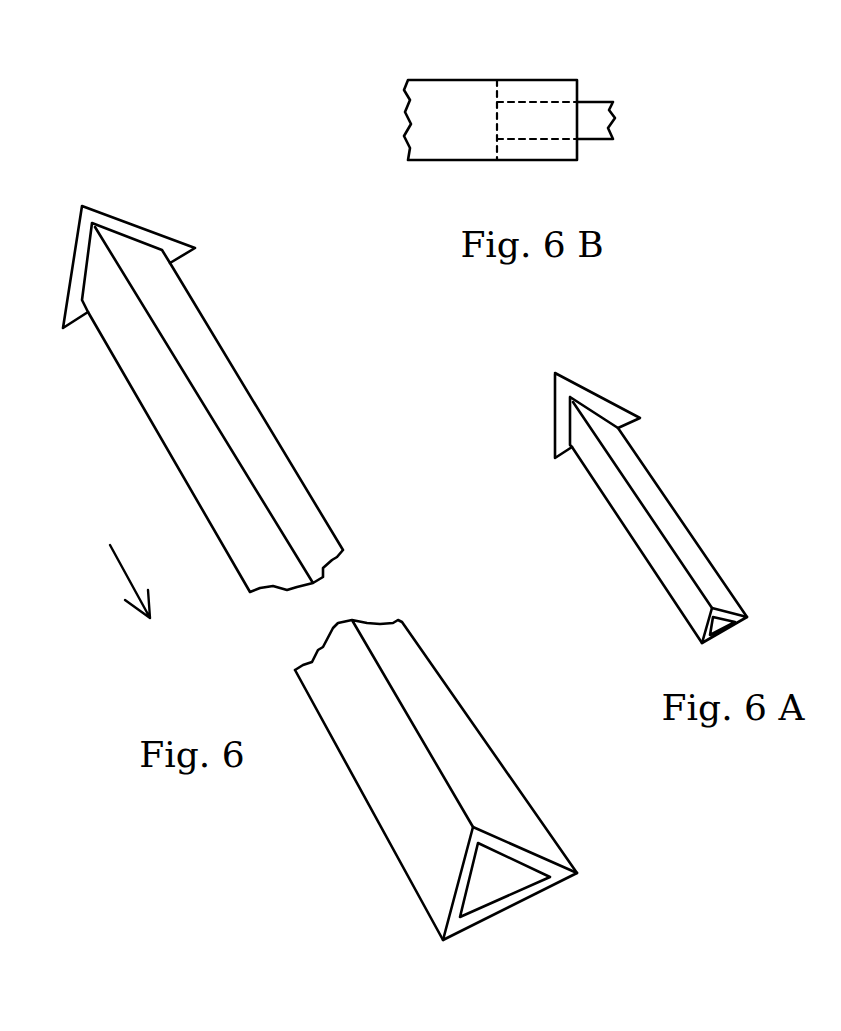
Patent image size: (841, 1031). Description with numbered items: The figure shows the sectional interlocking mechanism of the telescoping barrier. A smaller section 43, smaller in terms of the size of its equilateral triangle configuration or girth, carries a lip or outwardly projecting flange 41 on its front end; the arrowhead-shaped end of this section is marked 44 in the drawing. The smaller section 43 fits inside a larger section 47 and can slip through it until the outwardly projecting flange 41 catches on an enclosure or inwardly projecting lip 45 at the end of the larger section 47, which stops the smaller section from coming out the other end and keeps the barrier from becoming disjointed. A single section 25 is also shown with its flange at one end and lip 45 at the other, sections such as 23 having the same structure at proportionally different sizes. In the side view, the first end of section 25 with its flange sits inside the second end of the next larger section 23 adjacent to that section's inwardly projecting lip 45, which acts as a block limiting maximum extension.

In FIG. 6B, the section 23 is at (448, 79).
In FIG. 6A, the section 25 is at (673, 510).
In FIG. 6B, the section 25 is at (577, 82).
In FIG. 6A, the outwardly projecting flange 41 is at (592, 392).
In FIG. 6, the smaller section 43 is at (242, 380).
In FIG. 6, the arrowhead 44 is at (78, 265).
In FIG. 6, the inwardly projecting lip 45 is at (455, 923).
In FIG. 6A, the inwardly projecting lip 45 is at (708, 640).
In FIG. 6, the larger section 47 is at (485, 730).